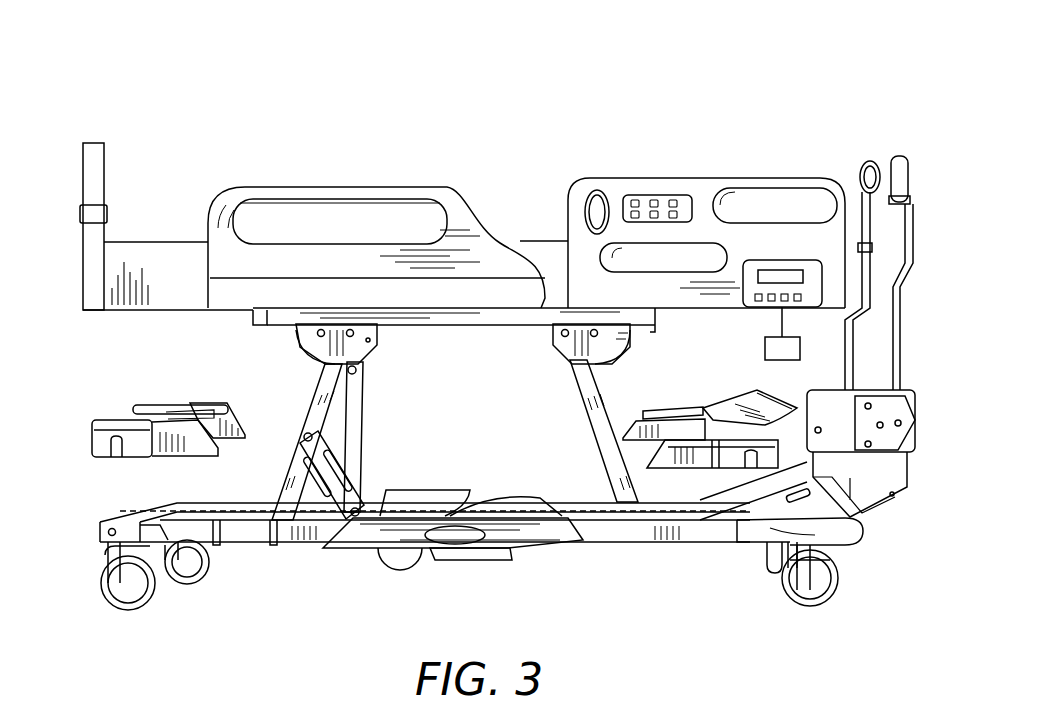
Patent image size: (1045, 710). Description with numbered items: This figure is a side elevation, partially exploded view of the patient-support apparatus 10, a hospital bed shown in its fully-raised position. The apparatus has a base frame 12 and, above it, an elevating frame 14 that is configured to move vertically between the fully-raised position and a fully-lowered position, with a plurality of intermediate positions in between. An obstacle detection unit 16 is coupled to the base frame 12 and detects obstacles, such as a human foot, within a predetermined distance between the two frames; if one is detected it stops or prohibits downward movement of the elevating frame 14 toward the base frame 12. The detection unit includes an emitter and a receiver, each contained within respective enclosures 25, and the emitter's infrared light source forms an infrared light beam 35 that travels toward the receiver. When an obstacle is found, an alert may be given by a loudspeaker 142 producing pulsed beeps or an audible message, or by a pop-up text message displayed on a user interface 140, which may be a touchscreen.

The patient-support apparatus 10 is at (140, 108).
The base frame 12 is at (634, 547).
The elevating frame 14 is at (460, 334).
The obstacle detection unit 16 is at (120, 487).
The enclosures 25 is at (123, 398).
The infrared light beam 35 is at (345, 540).
The user interface 140 is at (830, 281).
The loudspeaker 142 is at (756, 344).